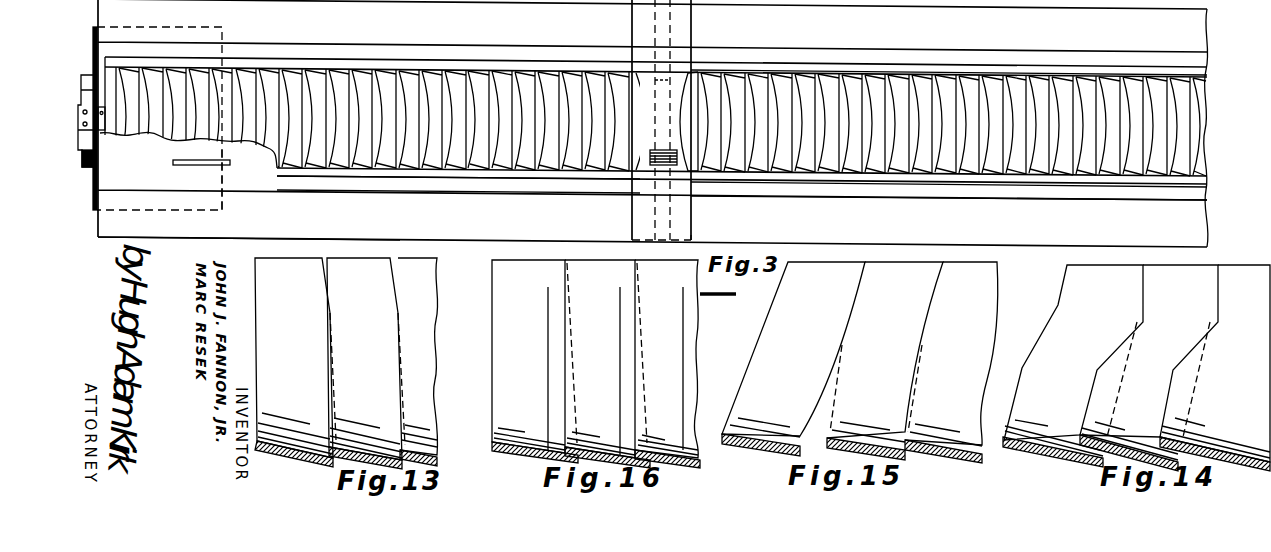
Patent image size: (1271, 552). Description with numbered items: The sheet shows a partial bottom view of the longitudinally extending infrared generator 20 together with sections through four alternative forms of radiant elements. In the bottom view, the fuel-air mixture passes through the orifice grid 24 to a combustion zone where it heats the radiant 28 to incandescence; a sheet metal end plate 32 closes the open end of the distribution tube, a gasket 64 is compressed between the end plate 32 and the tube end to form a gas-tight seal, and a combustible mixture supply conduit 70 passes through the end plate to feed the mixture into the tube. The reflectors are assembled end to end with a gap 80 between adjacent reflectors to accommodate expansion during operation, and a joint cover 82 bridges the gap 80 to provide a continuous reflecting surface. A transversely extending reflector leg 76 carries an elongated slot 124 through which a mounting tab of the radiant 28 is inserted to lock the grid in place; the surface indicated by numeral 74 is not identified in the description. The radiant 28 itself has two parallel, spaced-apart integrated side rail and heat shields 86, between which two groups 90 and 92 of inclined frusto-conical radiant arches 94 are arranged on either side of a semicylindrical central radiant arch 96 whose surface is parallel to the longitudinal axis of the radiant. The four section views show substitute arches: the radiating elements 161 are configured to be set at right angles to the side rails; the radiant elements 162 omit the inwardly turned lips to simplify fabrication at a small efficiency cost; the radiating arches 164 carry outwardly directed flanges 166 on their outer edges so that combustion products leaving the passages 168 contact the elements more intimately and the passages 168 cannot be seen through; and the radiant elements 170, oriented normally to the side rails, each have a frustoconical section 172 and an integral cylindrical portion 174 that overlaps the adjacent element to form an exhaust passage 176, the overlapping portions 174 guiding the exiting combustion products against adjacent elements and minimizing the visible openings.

In FIG. 3, the infrared generator 20 is at (1210, 166).
In FIG. 3, the orifice grid 24 is at (95, 147).
In FIG. 3, the radiant 28 is at (367, 180).
In FIG. 3, the end plate 32 is at (92, 28).
In FIG. 3, the gasket 64 is at (99, 33).
In FIG. 3, the combustible mixture supply conduit 70 is at (95, 166).
In FIG. 3, the trough wall 74 is at (209, 238).
In FIG. 3, the reflector leg 76 is at (228, 188).
In FIG. 3, the gap 80 is at (655, 214).
In FIG. 3, the joint cover 82 is at (699, 232).
In FIG. 3, the integrated side rail and heat shield 86 is at (797, 182).
In FIG. 3, the first group of inclined radiant elements 90 is at (462, 180).
In FIG. 3, the second group of inclined radiant elements 92 is at (866, 185).
In FIG. 3, the radiant arch 94 is at (365, 153).
In FIG. 3, the central radiant arch 96 is at (668, 172).
In FIG. 3, the elongated slot 124 is at (204, 160).
In FIG. 13, the radiating element 161 is at (410, 279).
In FIG. 14, the radiant element 162 is at (1245, 305).
In FIG. 15, the radiating arch 164 is at (957, 303).
In FIG. 15, the outwardly directed flange 166 is at (728, 433).
In FIG. 15, the passage 168 is at (785, 440).
In FIG. 16, the radiant element 170 is at (580, 305).
In FIG. 16, the frustoconical section 172 is at (513, 456).
In FIG. 16, the cylindrical portion 174 is at (557, 447).
In FIG. 16, the exhaust passage 176 is at (627, 447).